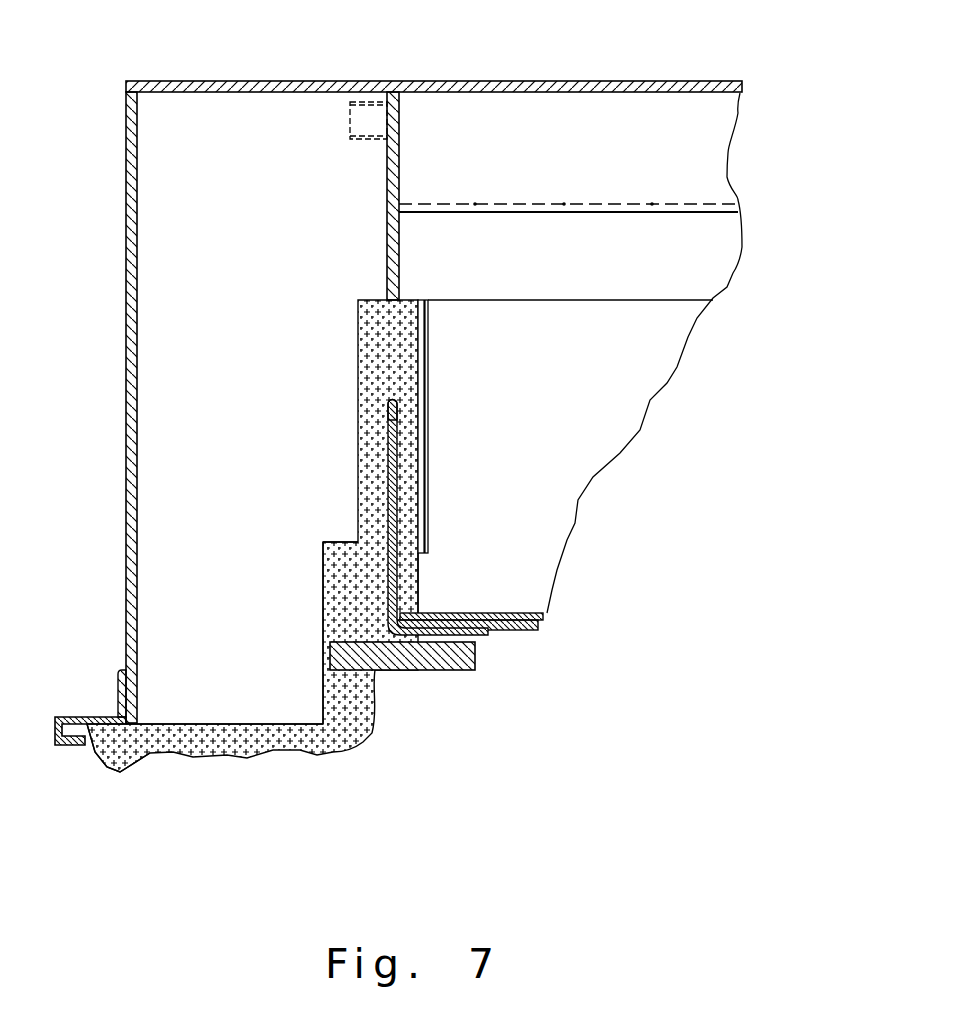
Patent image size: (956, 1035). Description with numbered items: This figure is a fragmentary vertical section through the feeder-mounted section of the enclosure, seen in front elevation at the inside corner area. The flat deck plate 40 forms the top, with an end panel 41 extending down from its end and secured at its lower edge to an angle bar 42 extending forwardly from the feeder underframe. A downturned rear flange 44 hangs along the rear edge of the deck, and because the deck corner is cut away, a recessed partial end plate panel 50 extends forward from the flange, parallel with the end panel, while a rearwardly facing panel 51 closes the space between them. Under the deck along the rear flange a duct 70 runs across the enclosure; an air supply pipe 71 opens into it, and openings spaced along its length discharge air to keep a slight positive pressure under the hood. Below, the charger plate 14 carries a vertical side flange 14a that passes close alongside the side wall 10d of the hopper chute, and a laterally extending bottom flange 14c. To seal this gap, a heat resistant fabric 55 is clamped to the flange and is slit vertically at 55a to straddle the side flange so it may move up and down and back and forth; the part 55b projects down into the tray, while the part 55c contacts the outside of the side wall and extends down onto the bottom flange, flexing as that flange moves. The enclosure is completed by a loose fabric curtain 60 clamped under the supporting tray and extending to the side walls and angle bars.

The side wall 10d is at (428, 370).
The charger plate 14 is at (520, 610).
The side flange 14a is at (388, 503).
The bottom flange 14c is at (447, 670).
The deck plate 40 is at (595, 82).
The end panel 41 is at (126, 227).
The angle bar 42 is at (120, 703).
The rear flange 44 is at (583, 300).
The recessed partial end plate panel 50 is at (387, 254).
The rearwardly facing panel 51 is at (257, 727).
The heat resistant fabric 55 is at (388, 340).
The vertical slit 55a is at (388, 400).
The fabric part 55b is at (417, 577).
The fabric part 55c is at (372, 619).
The fabric curtain 60 is at (105, 765).
The duct 70 is at (597, 214).
The air supply pipe 71 is at (350, 117).